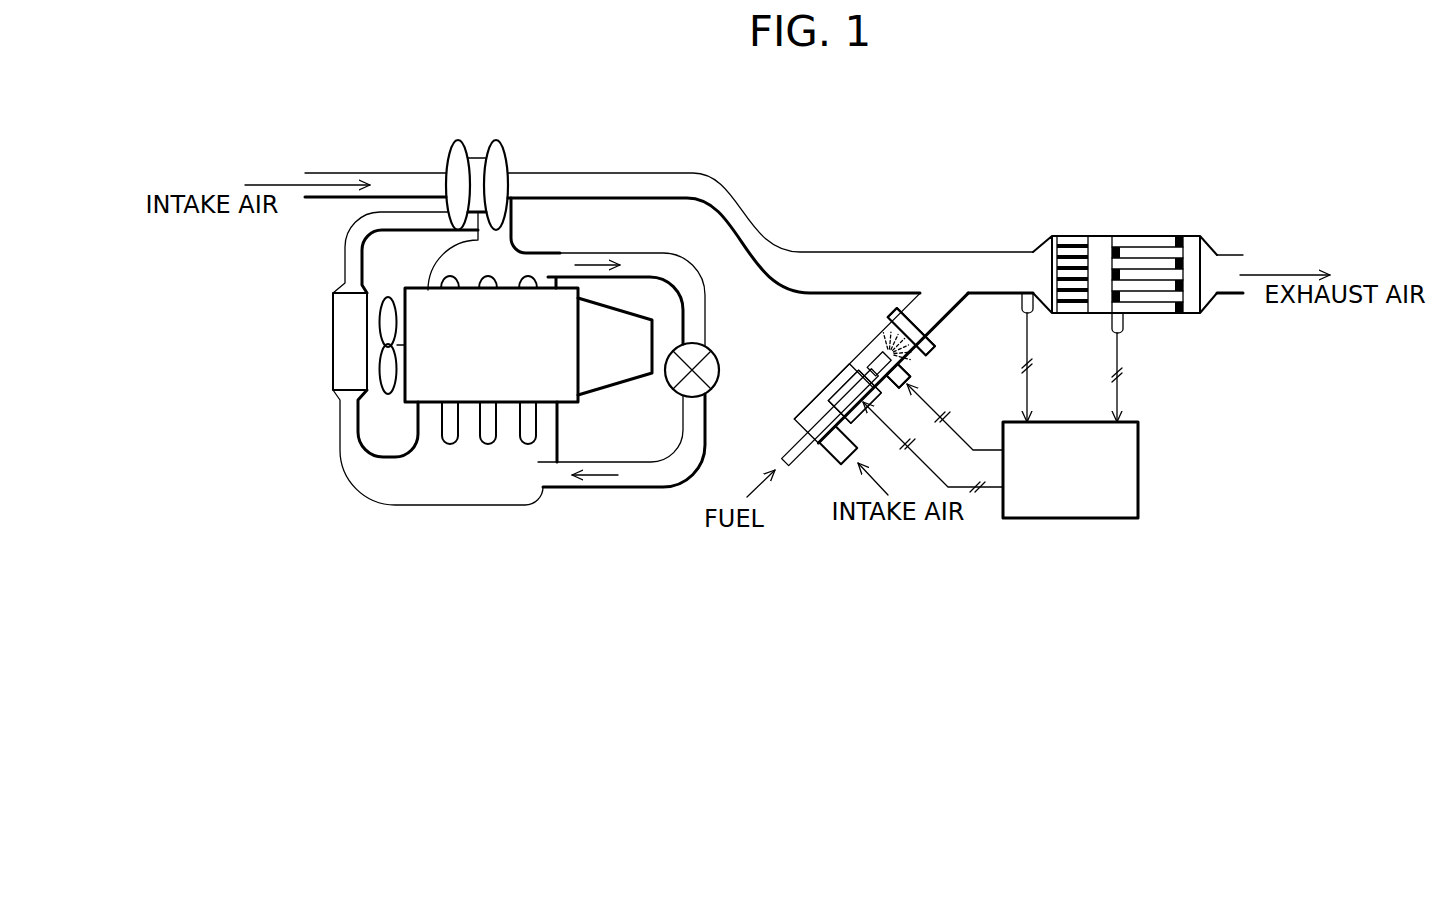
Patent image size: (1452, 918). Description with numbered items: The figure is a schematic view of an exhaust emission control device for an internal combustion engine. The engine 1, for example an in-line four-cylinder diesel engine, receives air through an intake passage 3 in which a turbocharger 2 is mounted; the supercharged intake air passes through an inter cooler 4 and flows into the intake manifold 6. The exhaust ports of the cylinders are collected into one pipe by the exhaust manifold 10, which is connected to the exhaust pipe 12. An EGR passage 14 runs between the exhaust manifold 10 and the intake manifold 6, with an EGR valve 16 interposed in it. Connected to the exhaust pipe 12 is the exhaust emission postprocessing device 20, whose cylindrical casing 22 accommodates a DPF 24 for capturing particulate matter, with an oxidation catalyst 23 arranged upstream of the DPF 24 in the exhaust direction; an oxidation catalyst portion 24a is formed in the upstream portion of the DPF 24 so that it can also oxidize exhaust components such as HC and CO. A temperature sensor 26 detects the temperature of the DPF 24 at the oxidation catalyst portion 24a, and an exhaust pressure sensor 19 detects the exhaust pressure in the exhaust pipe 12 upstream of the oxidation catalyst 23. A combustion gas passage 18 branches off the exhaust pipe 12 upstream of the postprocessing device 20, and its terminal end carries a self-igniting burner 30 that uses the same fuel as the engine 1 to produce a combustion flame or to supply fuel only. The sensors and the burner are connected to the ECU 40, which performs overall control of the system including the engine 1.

The engine 1 is at (412, 152).
The turbocharger 2 is at (482, 140).
The intake passage 3 is at (350, 248).
The inter cooler 4 is at (332, 328).
The intake manifold 6 is at (455, 485).
The exhaust manifold 10 is at (533, 250).
The exhaust pipe 12 is at (608, 183).
The EGR passage 14 is at (706, 311).
The EGR valve 16 is at (713, 378).
The combustion gas passage 18 is at (942, 308).
The exhaust pressure sensor 19 is at (1030, 310).
The exhaust emission postprocessing device 20 is at (1100, 236).
The cylindrical casing 22 is at (1217, 252).
The oxidation catalyst 23 is at (1071, 240).
The DPF 24 is at (1155, 240).
The oxidation catalyst portion 24a is at (1117, 240).
The temperature sensor 26 is at (1125, 322).
The burner 30 is at (845, 370).
The ECU 40 is at (1128, 440).